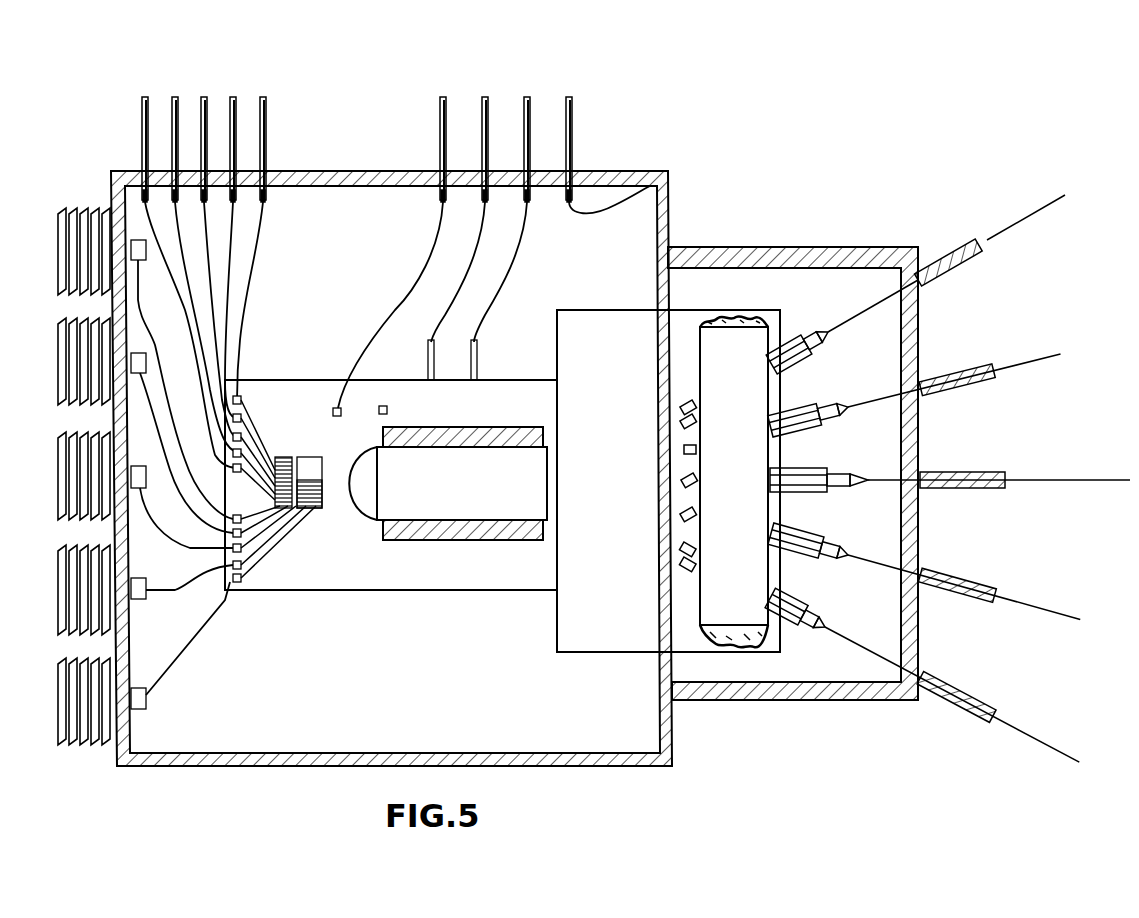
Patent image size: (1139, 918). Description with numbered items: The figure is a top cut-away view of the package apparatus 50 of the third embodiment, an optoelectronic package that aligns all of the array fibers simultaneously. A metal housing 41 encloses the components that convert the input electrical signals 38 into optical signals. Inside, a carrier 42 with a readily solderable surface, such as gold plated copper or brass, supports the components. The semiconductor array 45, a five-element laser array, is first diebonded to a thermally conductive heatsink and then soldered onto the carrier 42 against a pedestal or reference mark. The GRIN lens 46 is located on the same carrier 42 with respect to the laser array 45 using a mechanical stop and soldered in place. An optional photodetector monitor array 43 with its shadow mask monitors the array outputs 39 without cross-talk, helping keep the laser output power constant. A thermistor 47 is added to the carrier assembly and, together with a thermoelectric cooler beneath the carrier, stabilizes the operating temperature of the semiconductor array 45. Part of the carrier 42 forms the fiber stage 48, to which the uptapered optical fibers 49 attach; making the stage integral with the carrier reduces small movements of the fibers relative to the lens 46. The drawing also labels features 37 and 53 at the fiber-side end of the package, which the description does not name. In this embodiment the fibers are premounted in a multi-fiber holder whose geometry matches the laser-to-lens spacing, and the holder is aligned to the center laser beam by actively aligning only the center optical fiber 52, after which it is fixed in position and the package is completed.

The nozzles 37 is at (962, 252).
The input electrical signals 38 is at (90, 212).
The monitored array outputs 39 is at (263, 97).
The metal housing 41 is at (395, 171).
The carrier 42 is at (440, 568).
The photodetector monitor array 43 is at (282, 510).
The semiconductor array 45 is at (316, 510).
The GRIN lens 46 is at (508, 505).
The thermistor 47 is at (569, 97).
The fiber stage 48 is at (705, 650).
The uptapered optical fibers 49 is at (1008, 228).
The package apparatus 50 is at (640, 120).
The center optical fiber 52 is at (1020, 478).
The substrate plate 53 is at (752, 320).